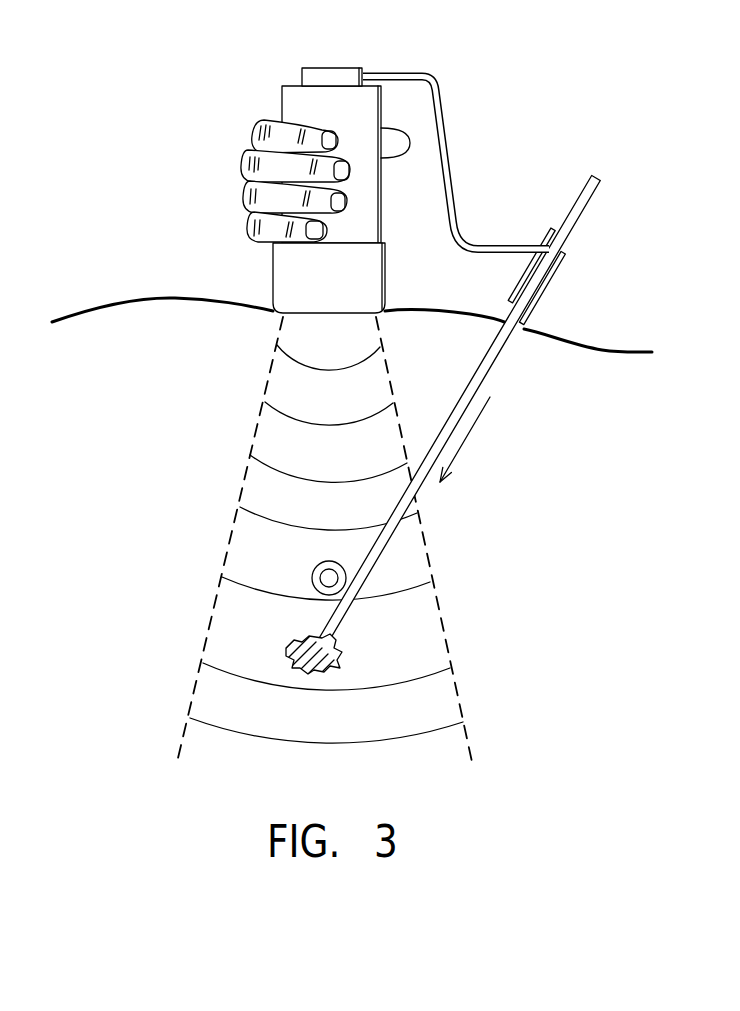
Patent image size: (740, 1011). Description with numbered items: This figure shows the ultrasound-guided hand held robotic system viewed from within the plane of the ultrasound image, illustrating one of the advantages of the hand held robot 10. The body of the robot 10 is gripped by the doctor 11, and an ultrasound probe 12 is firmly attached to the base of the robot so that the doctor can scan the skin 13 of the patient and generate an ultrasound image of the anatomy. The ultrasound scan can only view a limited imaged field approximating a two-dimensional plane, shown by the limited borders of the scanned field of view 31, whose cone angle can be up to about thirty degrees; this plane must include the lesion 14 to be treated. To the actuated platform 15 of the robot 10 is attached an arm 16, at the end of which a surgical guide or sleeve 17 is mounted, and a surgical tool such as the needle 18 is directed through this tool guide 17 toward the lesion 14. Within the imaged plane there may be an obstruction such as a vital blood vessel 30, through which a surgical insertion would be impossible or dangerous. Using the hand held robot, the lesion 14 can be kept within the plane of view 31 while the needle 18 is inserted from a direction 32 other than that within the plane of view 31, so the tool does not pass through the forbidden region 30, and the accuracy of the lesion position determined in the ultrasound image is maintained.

The robot 10 is at (381, 199).
The doctor 11 is at (247, 165).
The ultrasound probe 12 is at (385, 277).
The skin 13 is at (90, 308).
The lesion 14 is at (339, 664).
The actuated platform 15 is at (338, 68).
The arm 16 is at (447, 139).
The surgical guide or sleeve 17 is at (565, 262).
The needle 18 is at (492, 365).
The vital blood vessel 30 is at (311, 573).
The scanned field of view 31 is at (260, 438).
The direction 32 is at (473, 424).